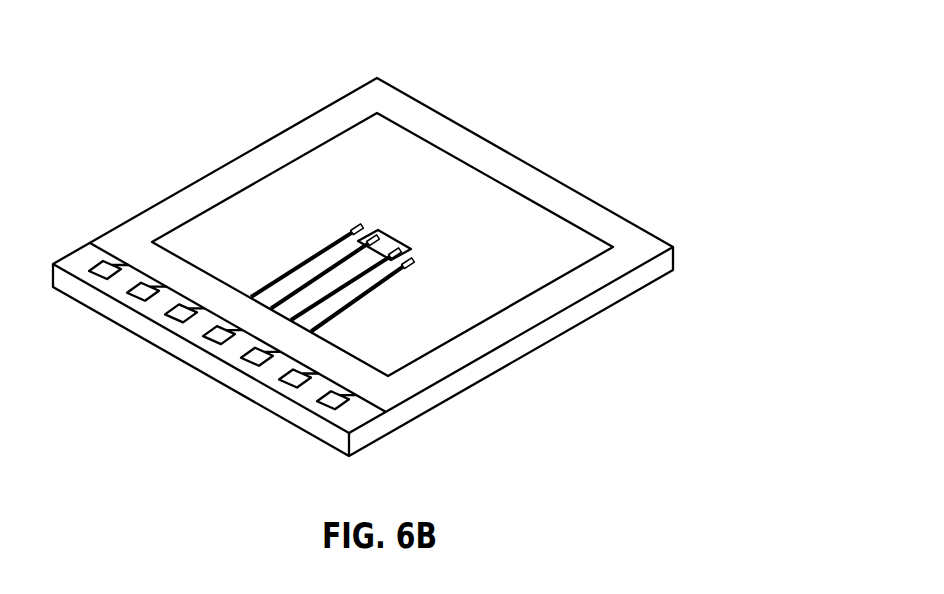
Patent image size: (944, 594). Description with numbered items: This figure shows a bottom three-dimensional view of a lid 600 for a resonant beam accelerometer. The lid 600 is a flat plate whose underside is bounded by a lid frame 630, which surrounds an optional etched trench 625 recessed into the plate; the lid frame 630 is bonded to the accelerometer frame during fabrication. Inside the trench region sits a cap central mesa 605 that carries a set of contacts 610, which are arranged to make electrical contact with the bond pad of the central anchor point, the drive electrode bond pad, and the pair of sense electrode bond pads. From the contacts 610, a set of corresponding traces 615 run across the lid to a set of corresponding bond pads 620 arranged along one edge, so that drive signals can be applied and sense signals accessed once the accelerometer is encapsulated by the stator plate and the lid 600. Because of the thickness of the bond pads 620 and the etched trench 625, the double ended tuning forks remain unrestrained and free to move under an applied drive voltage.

The lid 600 is at (403, 26).
The cap central mesa 605 is at (412, 222).
The contacts 610 is at (420, 270).
The traces 615 is at (355, 304).
The bond pads 620 is at (105, 270).
The etched trench 625 is at (267, 223).
The lid frame 630 is at (302, 131).